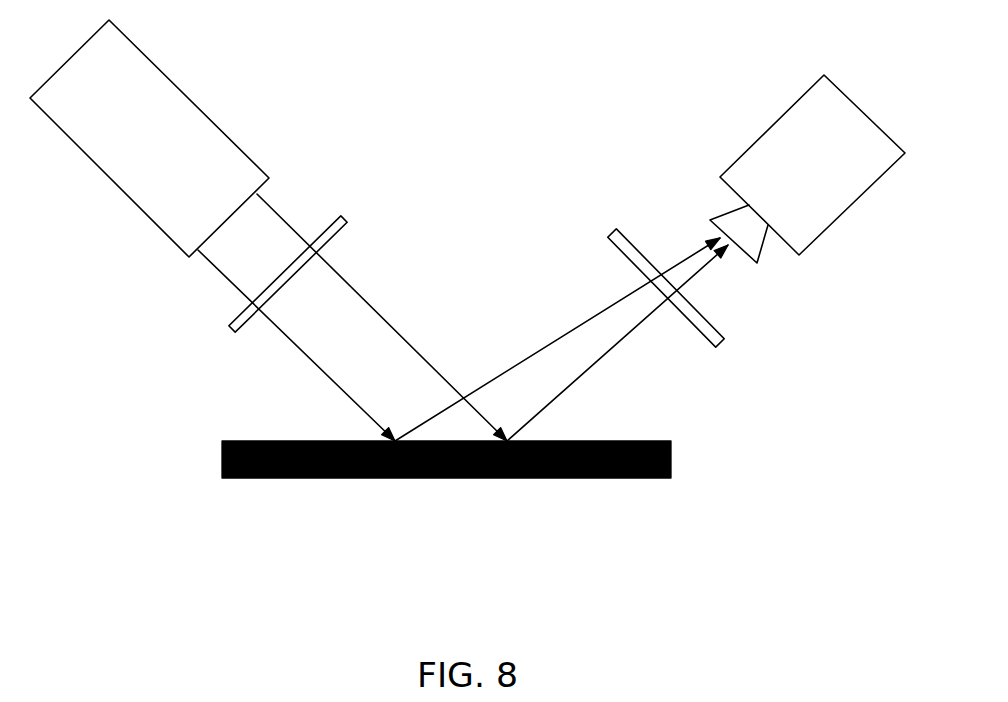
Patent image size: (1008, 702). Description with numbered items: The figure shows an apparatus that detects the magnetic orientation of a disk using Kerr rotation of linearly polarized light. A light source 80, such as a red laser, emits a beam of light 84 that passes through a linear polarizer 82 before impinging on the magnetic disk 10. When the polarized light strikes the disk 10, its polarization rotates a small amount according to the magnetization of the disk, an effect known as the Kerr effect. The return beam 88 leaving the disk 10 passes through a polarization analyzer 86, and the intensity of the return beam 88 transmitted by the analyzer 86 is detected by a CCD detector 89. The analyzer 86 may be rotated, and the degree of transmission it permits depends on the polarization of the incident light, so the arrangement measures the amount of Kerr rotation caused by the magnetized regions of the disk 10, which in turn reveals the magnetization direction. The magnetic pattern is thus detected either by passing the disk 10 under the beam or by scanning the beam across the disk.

The magnetic disk 10 is at (671, 459).
The light source 80 is at (158, 227).
The linear polarizer 82 is at (231, 329).
The beam of light 84 is at (325, 375).
The polarization analyzer 86 is at (633, 244).
The return beam 88 is at (552, 342).
The CCD detector 89 is at (837, 221).